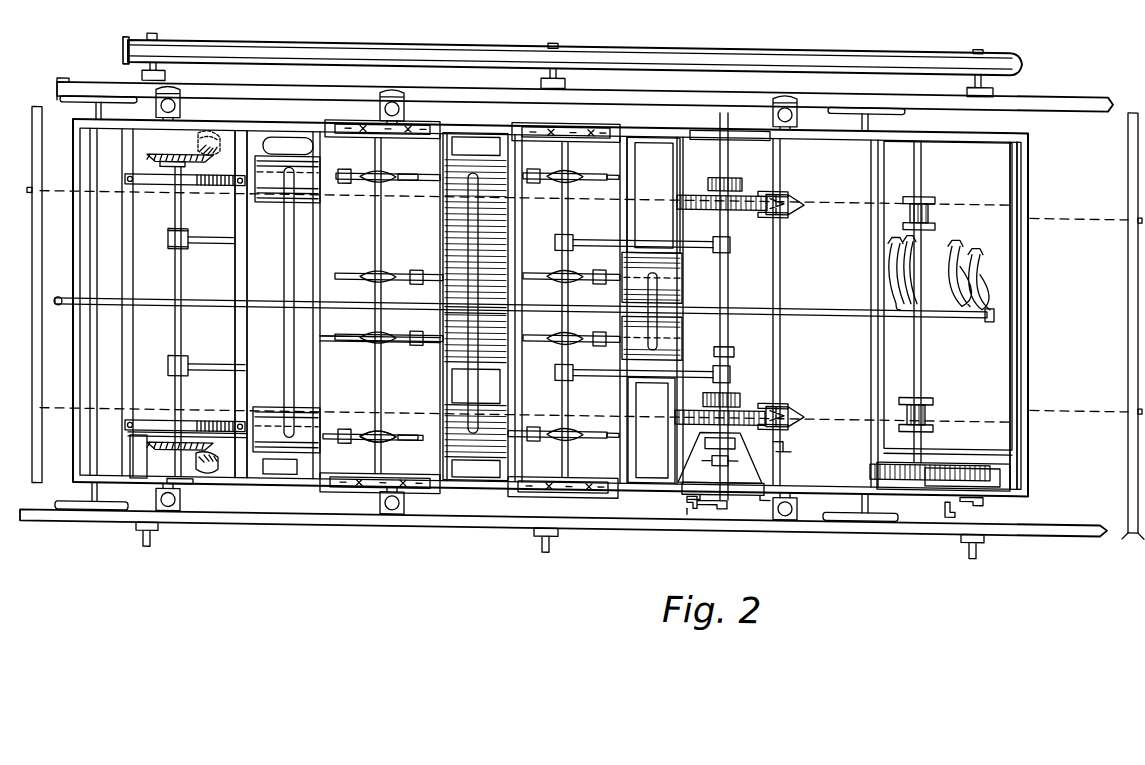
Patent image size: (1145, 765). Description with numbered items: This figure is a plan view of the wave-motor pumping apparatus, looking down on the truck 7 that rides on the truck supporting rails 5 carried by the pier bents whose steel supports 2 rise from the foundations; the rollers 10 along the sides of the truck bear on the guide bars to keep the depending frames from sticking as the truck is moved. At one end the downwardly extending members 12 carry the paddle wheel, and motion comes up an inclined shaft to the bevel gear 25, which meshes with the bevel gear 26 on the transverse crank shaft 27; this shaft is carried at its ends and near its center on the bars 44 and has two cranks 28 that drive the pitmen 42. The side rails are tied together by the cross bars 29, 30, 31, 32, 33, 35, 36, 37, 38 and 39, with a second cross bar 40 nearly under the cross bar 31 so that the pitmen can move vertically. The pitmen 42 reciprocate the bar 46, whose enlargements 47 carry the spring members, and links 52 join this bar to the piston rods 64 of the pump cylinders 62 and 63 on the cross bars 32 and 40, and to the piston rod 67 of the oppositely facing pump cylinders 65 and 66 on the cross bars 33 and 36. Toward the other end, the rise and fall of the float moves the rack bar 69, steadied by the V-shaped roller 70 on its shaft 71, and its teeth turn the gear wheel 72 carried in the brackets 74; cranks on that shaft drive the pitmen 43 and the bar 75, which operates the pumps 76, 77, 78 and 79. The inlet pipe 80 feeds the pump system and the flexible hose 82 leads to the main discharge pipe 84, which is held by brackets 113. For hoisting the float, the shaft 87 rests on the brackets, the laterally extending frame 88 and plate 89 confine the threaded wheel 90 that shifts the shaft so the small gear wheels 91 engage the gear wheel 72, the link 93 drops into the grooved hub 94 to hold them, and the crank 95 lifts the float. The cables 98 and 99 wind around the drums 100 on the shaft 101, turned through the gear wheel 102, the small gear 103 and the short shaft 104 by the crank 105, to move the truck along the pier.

The steel supports 2 is at (140, 77).
The truck supporting rails 5 is at (222, 82).
The truck 7 is at (46, 206).
The rollers 10 is at (182, 103).
The downwardly extending members 12 is at (202, 167).
The bevel gear 25 is at (217, 467).
The bevel gear 26 is at (167, 451).
The transverse crank shaft 27 is at (173, 324).
The cranks 28 is at (170, 241).
The cross bar 29 is at (73, 431).
The cross bar 30 is at (130, 448).
The cross bar 31 is at (238, 275).
The cross bar 32 is at (317, 352).
The cross bar 33 is at (445, 370).
The cross bar 35 is at (882, 369).
The cross bar 36 is at (505, 367).
The cross bar 37 is at (628, 384).
The cross bar 38 is at (677, 210).
The cross bar 39 is at (1018, 332).
The second cross bar 40 is at (285, 338).
The pitmen 42 is at (200, 241).
The pitmen 43 is at (587, 236).
The bars 44 is at (138, 182).
The bar 46 is at (377, 381).
The enlargements 47 is at (370, 267).
The links 52 is at (405, 175).
The pump cylinder 62 is at (310, 418).
The pump cylinder 63 is at (315, 163).
The piston rods 64 is at (347, 183).
The pump cylinder 65 is at (508, 254).
The pump cylinder 66 is at (448, 340).
The piston rod 67 is at (419, 266).
The rack bar 69 is at (778, 183).
The roller 70 is at (795, 203).
The shaft 71 is at (773, 436).
The gear wheel 72 is at (740, 201).
The brackets 74 is at (722, 124).
The bar 75 is at (560, 378).
The pump 76 is at (445, 430).
The pump 77 is at (502, 162).
The pump 78 is at (675, 267).
The pump 79 is at (675, 340).
The inlet pipe 80 is at (810, 300).
The flexible hose 82 is at (888, 260).
The main discharge pipe 84 is at (658, 44).
The shaft 87 is at (728, 336).
The laterally extending frame 88 is at (683, 476).
The plate 89 is at (740, 444).
The wheel 90 is at (707, 438).
The small gear wheels 91 is at (710, 171).
The link 93 is at (773, 470).
The grooved hub 94 is at (713, 453).
The crank 95 is at (688, 504).
The cable 98 is at (1060, 204).
The cable 99 is at (55, 403).
The drums 100 is at (940, 189).
The shaft 101 is at (923, 151).
The gear wheel 102 is at (905, 467).
The small gear 103 is at (980, 455).
The short shaft 104 is at (973, 447).
The crank 105 is at (947, 503).
The brackets 113 is at (153, 31).